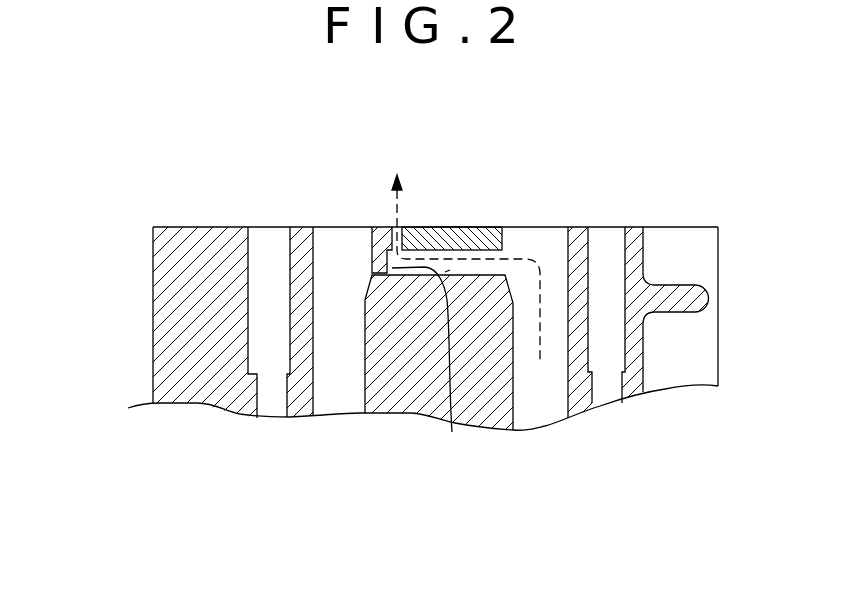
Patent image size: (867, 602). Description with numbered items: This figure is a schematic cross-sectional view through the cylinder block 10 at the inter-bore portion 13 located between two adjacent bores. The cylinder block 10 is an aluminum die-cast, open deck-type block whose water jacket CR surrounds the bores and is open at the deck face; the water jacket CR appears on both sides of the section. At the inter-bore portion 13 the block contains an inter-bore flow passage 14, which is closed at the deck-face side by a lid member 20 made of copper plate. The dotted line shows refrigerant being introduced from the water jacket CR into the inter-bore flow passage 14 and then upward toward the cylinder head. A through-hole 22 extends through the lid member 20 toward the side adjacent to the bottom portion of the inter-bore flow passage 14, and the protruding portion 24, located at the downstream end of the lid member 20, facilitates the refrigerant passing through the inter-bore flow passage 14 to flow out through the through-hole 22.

The cylinder block 10 is at (188, 248).
The inter-bore portion 13 is at (485, 407).
The inter-bore flow passage 14 is at (445, 272).
The lid member 20 is at (462, 225).
The through-hole 22 is at (402, 225).
The protruding portion 24 is at (452, 432).
The water jacket CR is at (337, 392).